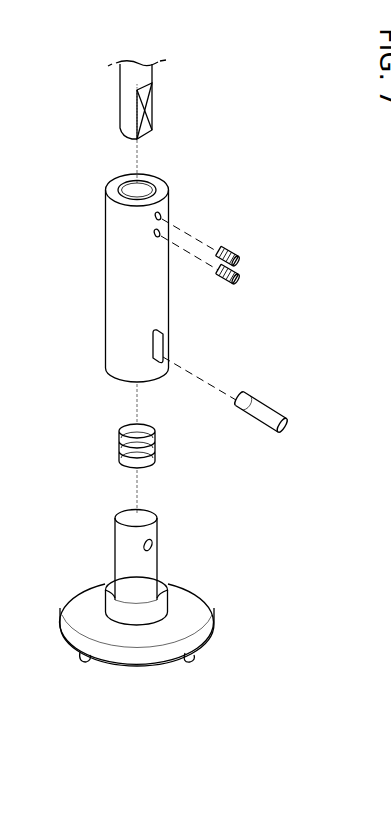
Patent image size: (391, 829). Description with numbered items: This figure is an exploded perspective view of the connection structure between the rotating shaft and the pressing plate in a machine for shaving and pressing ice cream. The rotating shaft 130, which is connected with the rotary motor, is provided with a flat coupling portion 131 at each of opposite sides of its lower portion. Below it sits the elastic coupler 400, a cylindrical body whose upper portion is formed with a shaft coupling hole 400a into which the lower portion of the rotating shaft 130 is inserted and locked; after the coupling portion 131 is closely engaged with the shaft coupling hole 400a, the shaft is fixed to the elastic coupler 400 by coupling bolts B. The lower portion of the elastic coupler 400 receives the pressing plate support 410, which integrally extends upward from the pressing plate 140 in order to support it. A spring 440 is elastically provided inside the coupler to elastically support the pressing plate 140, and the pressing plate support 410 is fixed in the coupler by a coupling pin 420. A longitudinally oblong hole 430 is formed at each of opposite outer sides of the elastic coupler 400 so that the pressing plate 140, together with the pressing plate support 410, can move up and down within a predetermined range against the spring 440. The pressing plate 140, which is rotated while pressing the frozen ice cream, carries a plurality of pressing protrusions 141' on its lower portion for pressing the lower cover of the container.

The rotating shaft 130 is at (125, 80).
The coupling portion 131 is at (150, 108).
The elastic coupler 400 is at (118, 270).
The shaft coupling hole 400a is at (140, 190).
The coupling bolt B is at (236, 270).
The longitudinally oblong hole 430 is at (160, 348).
The coupling pin 420 is at (262, 410).
The spring 440 is at (118, 432).
The pressing plate support 410 is at (122, 540).
The pressing plate 140 is at (195, 596).
The pressing protrusions 141' is at (180, 656).